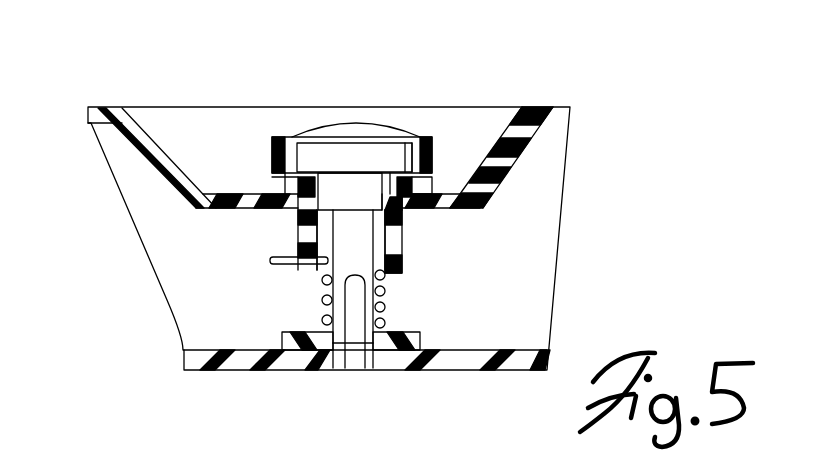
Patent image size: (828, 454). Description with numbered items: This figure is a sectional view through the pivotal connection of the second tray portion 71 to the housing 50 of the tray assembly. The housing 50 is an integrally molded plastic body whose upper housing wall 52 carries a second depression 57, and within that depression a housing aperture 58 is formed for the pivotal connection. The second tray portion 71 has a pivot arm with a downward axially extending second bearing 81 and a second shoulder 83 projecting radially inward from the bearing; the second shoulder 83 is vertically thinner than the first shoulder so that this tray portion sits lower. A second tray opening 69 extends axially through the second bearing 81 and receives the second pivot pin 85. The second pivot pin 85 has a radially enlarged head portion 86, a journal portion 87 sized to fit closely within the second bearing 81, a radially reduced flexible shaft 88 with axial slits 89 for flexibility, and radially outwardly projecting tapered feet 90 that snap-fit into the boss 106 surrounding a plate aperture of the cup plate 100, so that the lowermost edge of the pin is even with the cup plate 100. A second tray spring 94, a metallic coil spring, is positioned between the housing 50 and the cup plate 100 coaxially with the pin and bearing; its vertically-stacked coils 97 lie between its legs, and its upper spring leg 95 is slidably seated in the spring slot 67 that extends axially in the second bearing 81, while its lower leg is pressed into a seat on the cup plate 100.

The housing 50 is at (125, 107).
The upper housing wall 52 is at (553, 105).
The second depression 57 is at (176, 148).
The housing aperture 58 is at (320, 210).
The spring slot 67 is at (305, 253).
The second tray opening 69 is at (408, 140).
The second tray portion 71 is at (425, 190).
The second bearing 81 is at (430, 148).
The second shoulder 83 is at (390, 192).
The second pivot pin 85 is at (310, 131).
The head portion 86 is at (327, 147).
The journal portion 87 is at (388, 210).
The flexible shaft 88 is at (400, 255).
The axial slits 89 is at (353, 373).
The tapered feet 90 is at (327, 353).
The second tray spring 94 is at (403, 300).
The upper spring leg 95 is at (268, 261).
The coils 97 is at (322, 303).
The cup plate 100 is at (470, 378).
The boss 106 is at (403, 323).